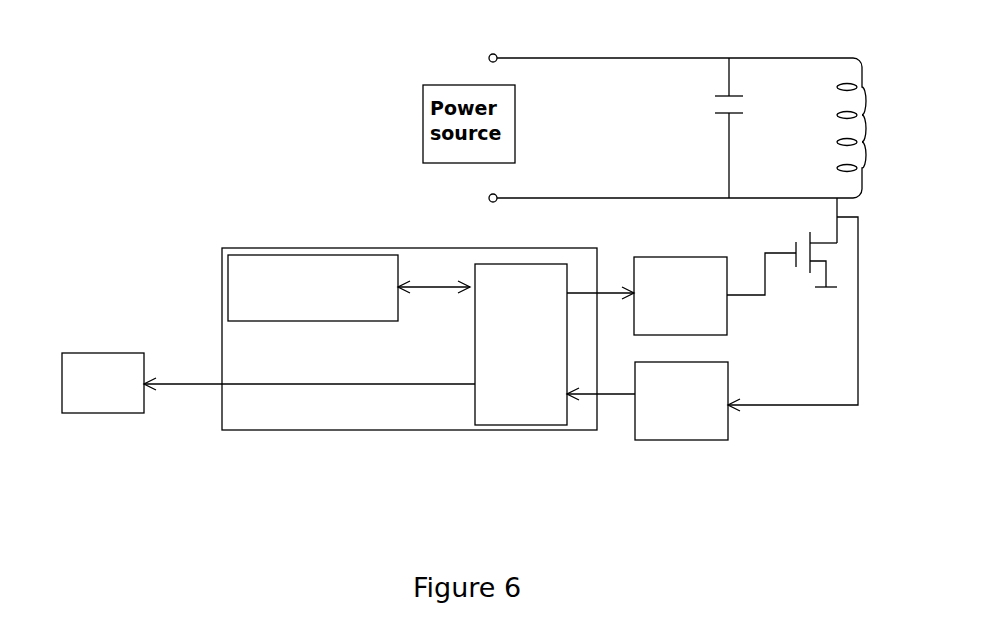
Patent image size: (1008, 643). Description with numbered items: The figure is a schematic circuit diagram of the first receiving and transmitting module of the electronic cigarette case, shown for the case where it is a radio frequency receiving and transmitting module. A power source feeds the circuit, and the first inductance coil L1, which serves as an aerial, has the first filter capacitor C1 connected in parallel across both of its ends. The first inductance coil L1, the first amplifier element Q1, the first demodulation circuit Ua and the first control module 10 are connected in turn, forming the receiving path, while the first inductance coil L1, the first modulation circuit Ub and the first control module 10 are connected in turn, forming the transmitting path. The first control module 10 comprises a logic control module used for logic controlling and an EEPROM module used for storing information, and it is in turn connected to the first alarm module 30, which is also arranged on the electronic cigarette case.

The first control module 10 is at (307, 430).
The first alarm module 30 is at (95, 413).
The first filter capacitor C1 is at (746, 128).
The first inductance coil L1 is at (848, 112).
The first amplifier element Q1 is at (782, 246).
The first demodulation circuit Ua is at (697, 296).
The first modulation circuit Ub is at (698, 401).